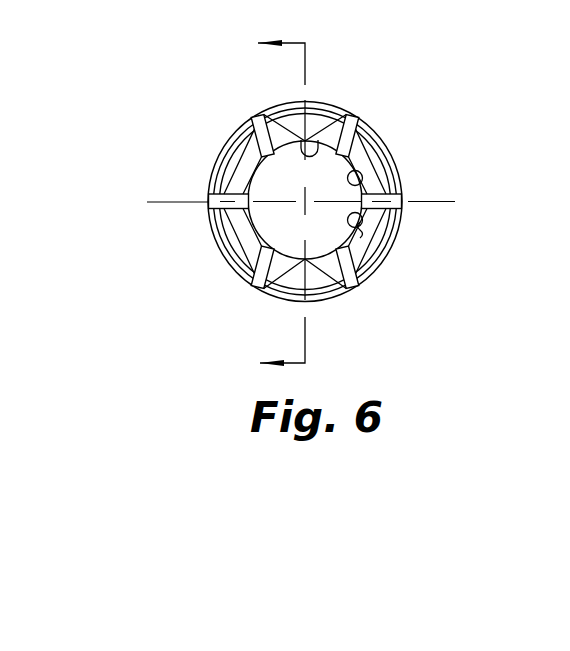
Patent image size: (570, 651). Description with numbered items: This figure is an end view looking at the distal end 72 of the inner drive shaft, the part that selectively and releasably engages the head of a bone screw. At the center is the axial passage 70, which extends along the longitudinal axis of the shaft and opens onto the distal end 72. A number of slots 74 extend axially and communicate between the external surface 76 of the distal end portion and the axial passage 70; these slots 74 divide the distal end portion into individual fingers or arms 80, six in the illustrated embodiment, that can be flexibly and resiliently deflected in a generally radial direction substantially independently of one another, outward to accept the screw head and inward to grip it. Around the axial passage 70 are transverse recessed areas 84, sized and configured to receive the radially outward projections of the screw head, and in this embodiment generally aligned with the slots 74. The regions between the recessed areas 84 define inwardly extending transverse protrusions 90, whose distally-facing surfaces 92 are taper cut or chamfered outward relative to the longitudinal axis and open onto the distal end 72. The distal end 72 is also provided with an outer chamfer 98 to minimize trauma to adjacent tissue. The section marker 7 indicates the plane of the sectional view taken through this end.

The section line 7- 7 is at (293, 205).
The axial passage 70 is at (293, 190).
The distal end 72 is at (373, 128).
The slots 74 is at (327, 137).
The external surface 76 is at (387, 150).
The fingers or arms 80 is at (203, 149).
The recessed areas 84 is at (305, 140).
The transverse protrusions 90 is at (358, 229).
The distally-facing surfaces 92 is at (384, 254).
The outer chamfer 98 is at (275, 104).